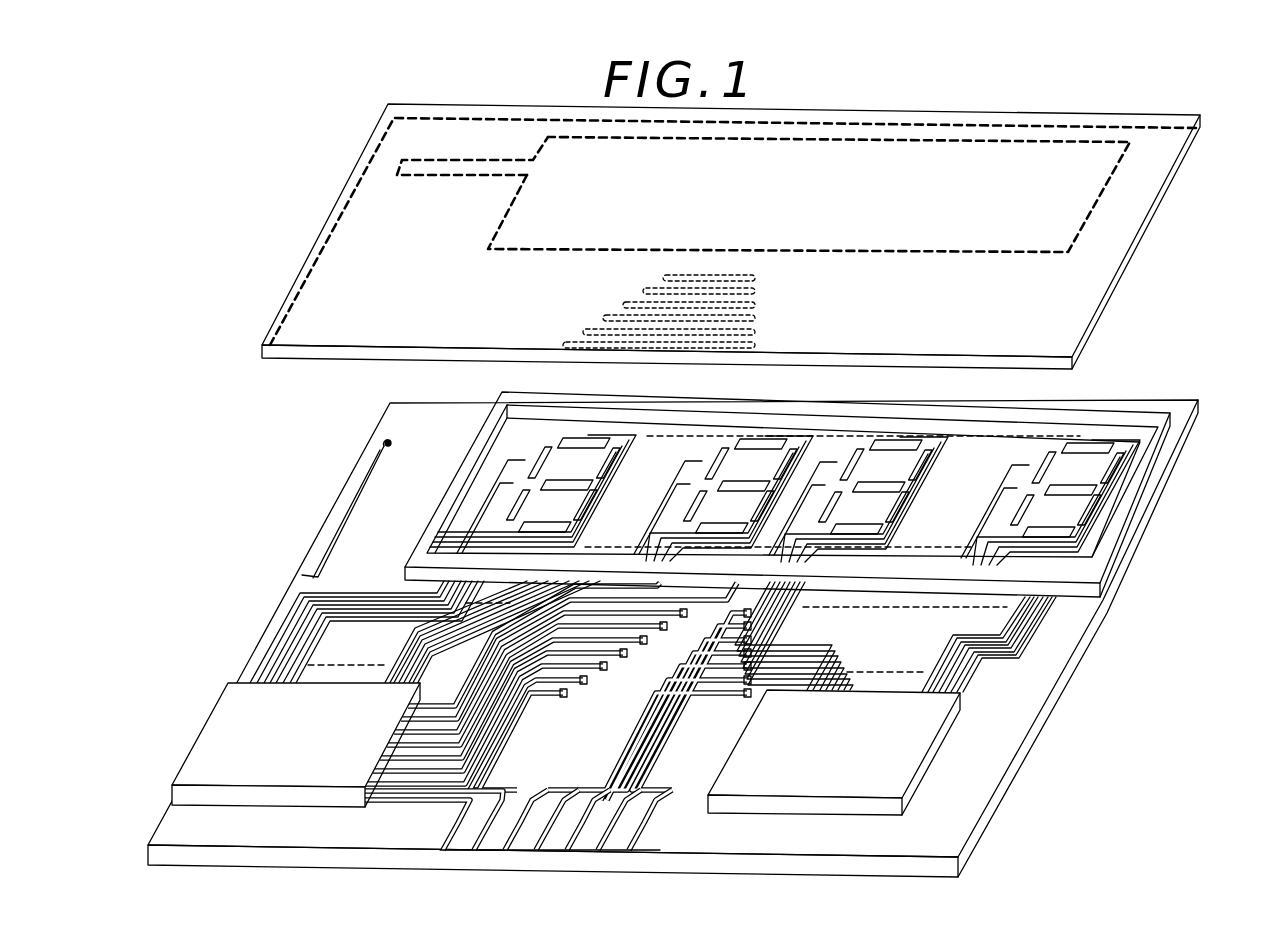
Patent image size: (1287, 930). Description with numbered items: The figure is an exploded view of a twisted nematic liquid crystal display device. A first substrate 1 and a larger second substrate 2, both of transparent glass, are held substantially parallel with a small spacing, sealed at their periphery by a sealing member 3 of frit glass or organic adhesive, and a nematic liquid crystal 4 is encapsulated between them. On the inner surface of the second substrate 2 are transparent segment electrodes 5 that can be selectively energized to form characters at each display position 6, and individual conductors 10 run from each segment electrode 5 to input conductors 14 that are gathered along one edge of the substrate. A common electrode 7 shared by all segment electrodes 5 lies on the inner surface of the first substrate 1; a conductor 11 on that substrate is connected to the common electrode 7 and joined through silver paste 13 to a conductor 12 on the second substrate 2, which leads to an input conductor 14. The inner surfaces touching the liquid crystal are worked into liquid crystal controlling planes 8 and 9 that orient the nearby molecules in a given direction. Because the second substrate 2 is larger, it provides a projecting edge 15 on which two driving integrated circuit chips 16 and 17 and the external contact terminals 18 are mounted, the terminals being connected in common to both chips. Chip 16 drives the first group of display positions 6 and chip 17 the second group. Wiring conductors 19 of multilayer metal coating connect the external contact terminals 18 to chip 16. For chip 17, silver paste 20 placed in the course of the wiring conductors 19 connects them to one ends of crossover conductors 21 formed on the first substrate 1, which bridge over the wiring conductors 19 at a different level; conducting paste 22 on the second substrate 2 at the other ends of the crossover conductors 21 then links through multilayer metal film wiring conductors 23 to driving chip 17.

The first substrate 1 is at (1152, 157).
The second substrate 2 is at (1073, 612).
The sealing member 3 is at (1150, 483).
The nematic liquid crystal 4 is at (1153, 447).
The segment electrodes 5 is at (1073, 495).
The display positions 6 is at (1062, 445).
The common electrode 7 is at (1073, 203).
The liquid crystal controlling plane 8 is at (1077, 288).
The liquid crystal controlling plane 9 is at (983, 480).
The individual conductors 10 is at (630, 462).
The conductor 11 is at (423, 170).
The conductor 12 is at (362, 485).
The silver paste 13 is at (385, 440).
The input conductors 14 is at (375, 617).
The projecting edge 15 is at (1000, 705).
The driving integrated circuit chip 16 is at (237, 743).
The driving integrated circuit chip 17 is at (927, 717).
The external contact terminals 18 is at (450, 833).
The wiring conductors 19 is at (400, 697).
The silver paste 20 is at (427, 673).
The crossover conductors 21 is at (607, 316).
The conducting paste 22 is at (767, 690).
The multilayer metal film wiring conductors 23 is at (718, 763).